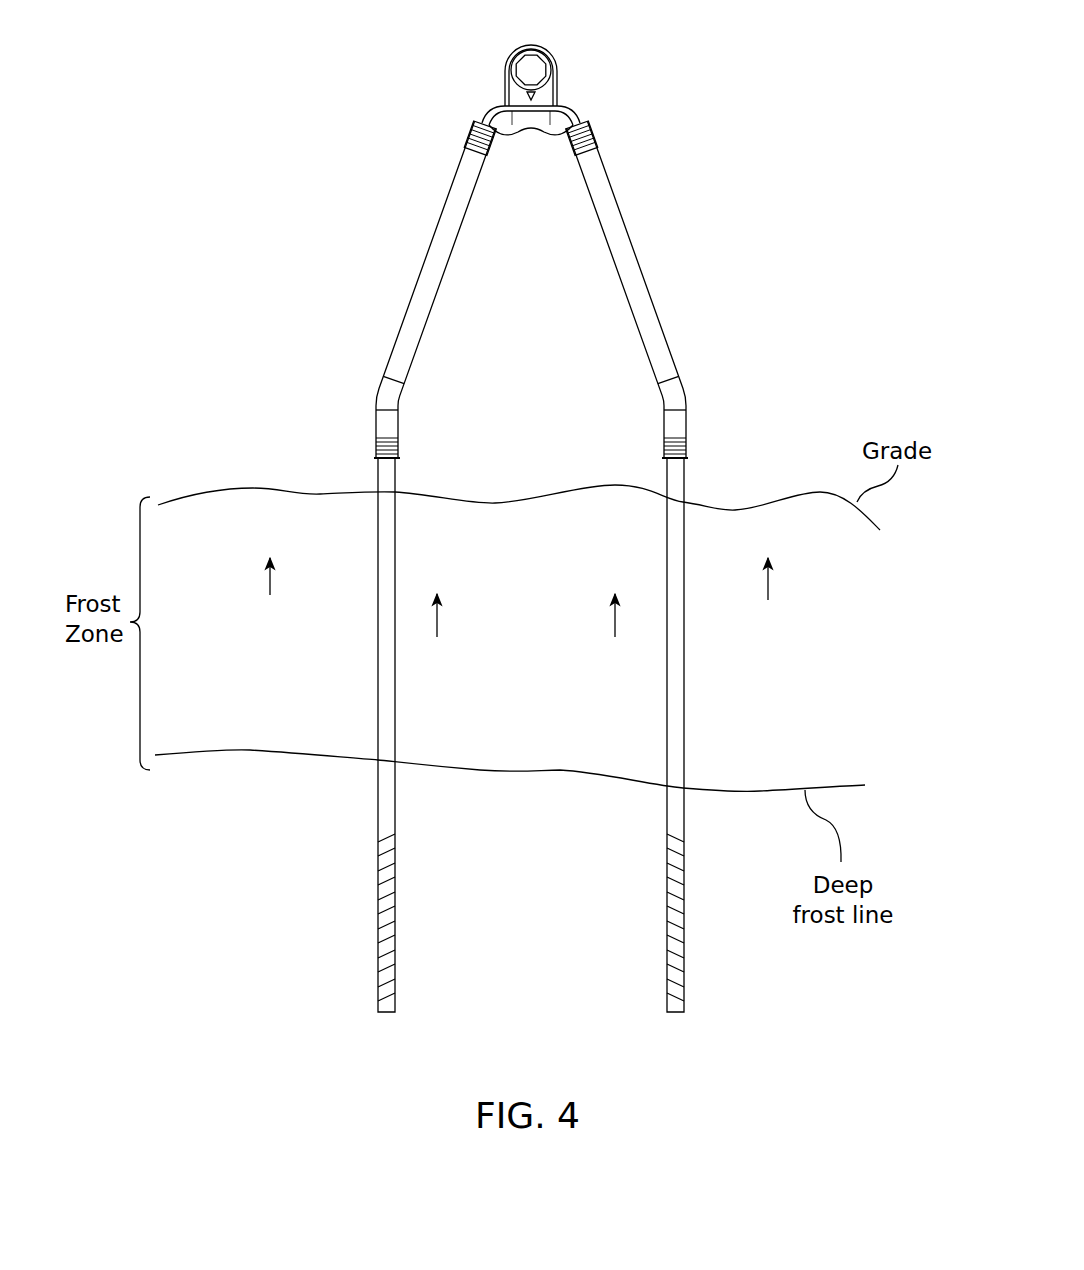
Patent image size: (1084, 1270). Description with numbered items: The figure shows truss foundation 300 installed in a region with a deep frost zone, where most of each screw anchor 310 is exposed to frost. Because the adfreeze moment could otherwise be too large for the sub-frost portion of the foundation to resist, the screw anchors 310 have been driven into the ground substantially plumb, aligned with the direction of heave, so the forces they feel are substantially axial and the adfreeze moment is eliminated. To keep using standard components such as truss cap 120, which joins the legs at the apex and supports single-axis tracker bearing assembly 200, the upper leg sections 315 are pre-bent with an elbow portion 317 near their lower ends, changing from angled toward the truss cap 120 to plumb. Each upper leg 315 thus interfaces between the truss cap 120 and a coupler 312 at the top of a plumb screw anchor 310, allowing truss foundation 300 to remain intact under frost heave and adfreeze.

The single-axis tracker bearing assembly 200 is at (563, 59).
The truss cap 120 is at (531, 130).
The truss foundation 300 is at (546, 559).
The upper leg section 315 is at (626, 256).
The elbow portion 317 is at (694, 376).
The coupler 312 is at (376, 446).
The screw anchor 310 is at (378, 650).